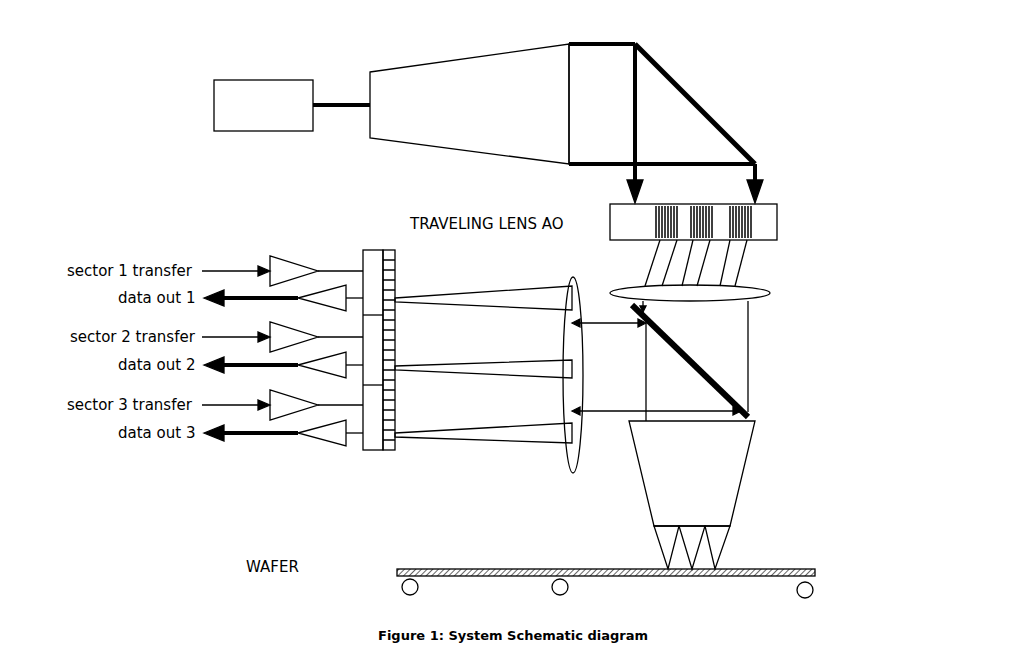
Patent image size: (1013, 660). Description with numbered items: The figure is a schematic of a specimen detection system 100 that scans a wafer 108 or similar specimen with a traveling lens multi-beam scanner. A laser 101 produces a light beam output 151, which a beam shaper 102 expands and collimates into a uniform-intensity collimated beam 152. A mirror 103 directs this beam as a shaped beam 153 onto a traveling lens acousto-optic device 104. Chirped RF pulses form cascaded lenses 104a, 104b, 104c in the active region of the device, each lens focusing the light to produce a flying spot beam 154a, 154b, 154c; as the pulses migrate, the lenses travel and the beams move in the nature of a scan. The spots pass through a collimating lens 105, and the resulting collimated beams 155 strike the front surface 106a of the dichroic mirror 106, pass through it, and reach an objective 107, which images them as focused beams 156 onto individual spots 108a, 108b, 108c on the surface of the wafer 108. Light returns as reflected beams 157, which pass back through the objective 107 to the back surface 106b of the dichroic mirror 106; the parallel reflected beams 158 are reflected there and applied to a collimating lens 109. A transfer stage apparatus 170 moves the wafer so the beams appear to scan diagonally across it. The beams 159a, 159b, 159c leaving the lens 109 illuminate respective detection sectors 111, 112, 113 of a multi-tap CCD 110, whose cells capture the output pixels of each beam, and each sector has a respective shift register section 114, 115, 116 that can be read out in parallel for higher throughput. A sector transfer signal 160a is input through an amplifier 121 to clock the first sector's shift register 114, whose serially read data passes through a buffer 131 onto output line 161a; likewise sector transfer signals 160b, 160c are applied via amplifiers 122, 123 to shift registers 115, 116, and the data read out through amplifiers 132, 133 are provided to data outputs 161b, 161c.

The specimen detection system 100 is at (52, 24).
The laser 101 is at (246, 78).
The light beam output 151 is at (339, 92).
The beam shaper 102 is at (472, 56).
The collimated beam 152 is at (600, 43).
The mirror 103 is at (687, 80).
The shaped beam 153 is at (790, 183).
The traveling lens acousto-optic device 104 is at (720, 213).
The cascaded lens 104a is at (665, 197).
The cascaded lens 104b is at (703, 203).
The cascaded lens 104c is at (757, 217).
The flying spot beam 154a is at (637, 263).
The flying spot beam 154b is at (680, 279).
The flying spot beam 154c is at (739, 271).
The collimating lens 105 is at (710, 297).
The dichroic mirror 106 is at (743, 361).
The front surface of dichroic mirror 106a is at (698, 338).
The back surface of dichroic mirror 106b is at (672, 394).
The collimated beams 155 is at (736, 364).
The parallel reflected beams 158 is at (614, 330).
The objective 107 is at (745, 472).
The focused beams 156 is at (722, 548).
The reflected beams 157 is at (654, 553).
The wafer 108 is at (635, 588).
The spot 108a is at (662, 577).
The spot 108b is at (692, 577).
The spot 108c is at (728, 578).
The transfer stage apparatus 170 is at (408, 595).
The collimating lens 109 is at (555, 482).
The multi-tap CCD 110 is at (391, 357).
The first sector 111 is at (400, 264).
The second sector 112 is at (400, 332).
The third sector 113 is at (400, 398).
The shift register section 114 is at (358, 282).
The shift register section 115 is at (358, 351).
The shift register section 116 is at (365, 452).
The amplifier 121 is at (286, 256).
The amplifier 122 is at (289, 324).
The amplifier 123 is at (289, 394).
The buffer 131 is at (341, 290).
The amplifier 132 is at (342, 359).
The amplifier 133 is at (342, 424).
The beam 159a is at (460, 292).
The beam 159b is at (463, 363).
The beam 159c is at (467, 429).
The sector transfer signal 160a is at (219, 265).
The sector transfer signal 160b is at (225, 333).
The sector transfer signal 160c is at (223, 401).
The output line 161a is at (259, 294).
The data output 161b is at (265, 360).
The data output 161c is at (265, 429).